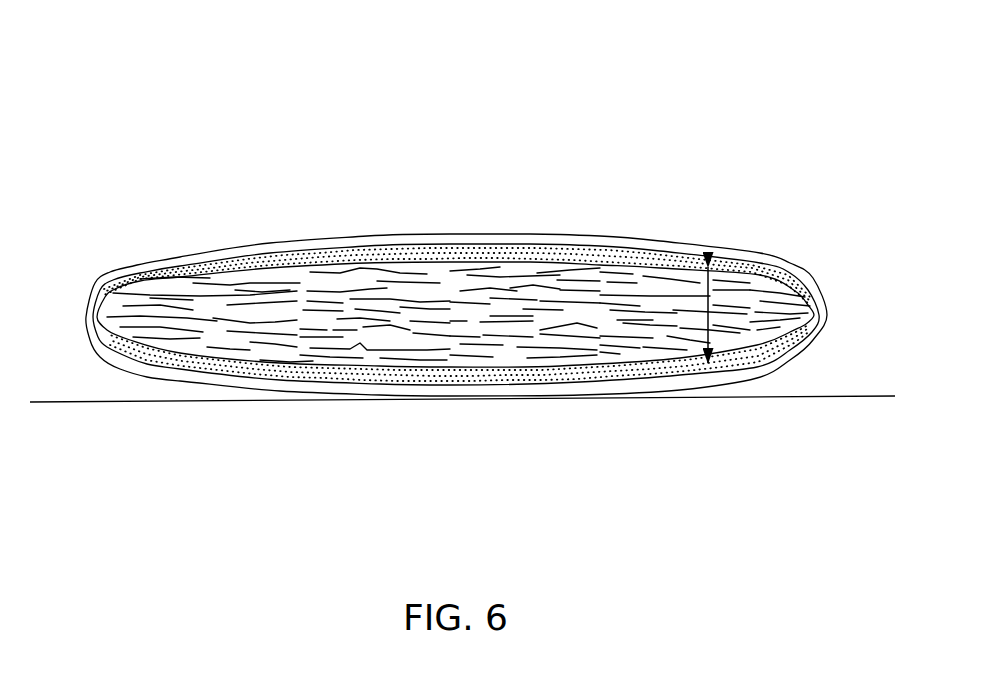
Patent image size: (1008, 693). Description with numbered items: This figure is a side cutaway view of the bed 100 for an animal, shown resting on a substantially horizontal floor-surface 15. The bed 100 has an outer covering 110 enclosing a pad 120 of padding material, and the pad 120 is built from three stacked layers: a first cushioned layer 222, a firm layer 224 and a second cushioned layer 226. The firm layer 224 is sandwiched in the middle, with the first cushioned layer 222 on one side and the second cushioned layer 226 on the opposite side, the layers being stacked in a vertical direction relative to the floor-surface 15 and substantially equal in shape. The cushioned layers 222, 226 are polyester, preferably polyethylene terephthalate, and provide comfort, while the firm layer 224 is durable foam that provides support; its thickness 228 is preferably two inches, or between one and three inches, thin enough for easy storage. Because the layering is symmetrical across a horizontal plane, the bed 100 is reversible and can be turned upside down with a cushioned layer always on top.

The substantially horizontal floor-surface 15 is at (853, 393).
The bed 100 is at (725, 70).
The outer cover 110 is at (362, 235).
The pad 120 is at (125, 271).
The first cushioned layer 222 is at (634, 257).
The firm layer 224 is at (263, 344).
The second cushioned layer 226 is at (574, 380).
The thickness 228 is at (710, 308).